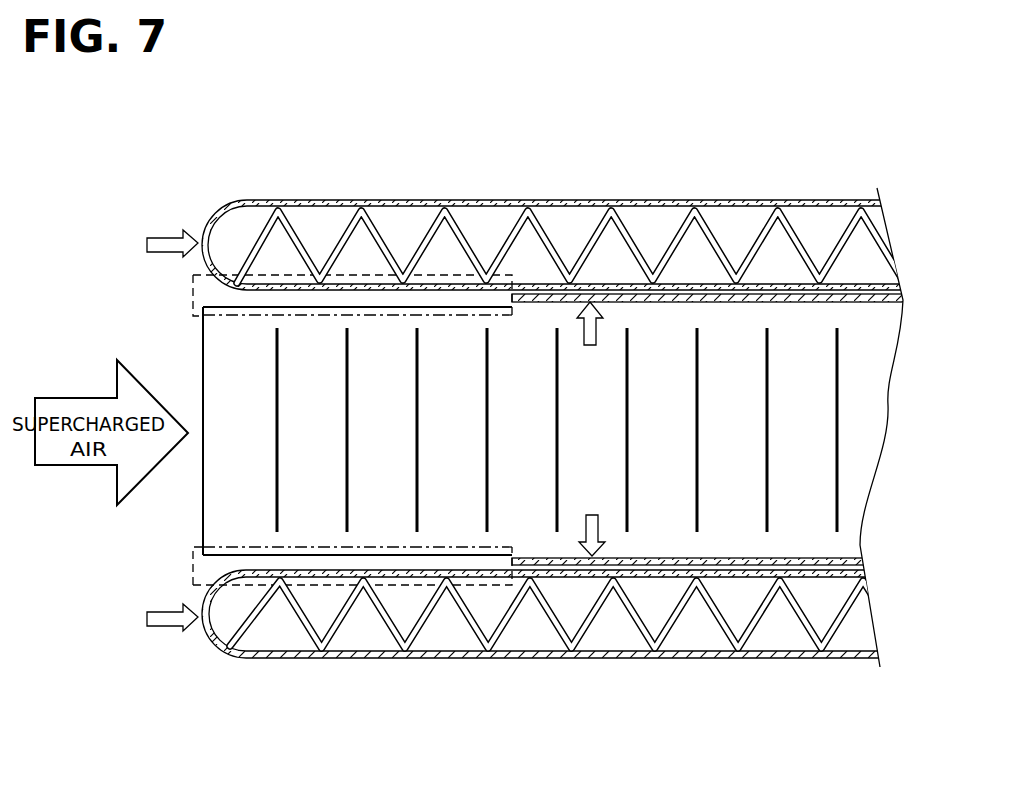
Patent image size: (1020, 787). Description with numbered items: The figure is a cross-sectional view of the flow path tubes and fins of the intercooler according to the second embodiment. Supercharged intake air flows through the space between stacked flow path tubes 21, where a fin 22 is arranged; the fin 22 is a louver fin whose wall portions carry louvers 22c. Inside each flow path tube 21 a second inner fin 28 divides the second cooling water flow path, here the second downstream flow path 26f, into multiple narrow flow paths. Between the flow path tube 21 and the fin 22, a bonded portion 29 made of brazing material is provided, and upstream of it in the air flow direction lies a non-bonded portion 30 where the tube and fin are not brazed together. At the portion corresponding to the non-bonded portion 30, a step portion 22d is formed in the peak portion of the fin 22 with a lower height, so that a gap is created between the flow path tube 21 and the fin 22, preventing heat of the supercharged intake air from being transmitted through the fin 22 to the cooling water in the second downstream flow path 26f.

The flow path tube 21 is at (593, 202).
The fin 22 is at (203, 347).
The louver 22c is at (276, 492).
The step portion 22d is at (263, 306).
The second downstream flow path 26f is at (400, 232).
The second inner fin 28 is at (300, 225).
The bonded portion 29 is at (697, 296).
The non-bonded portion 30 is at (463, 290).